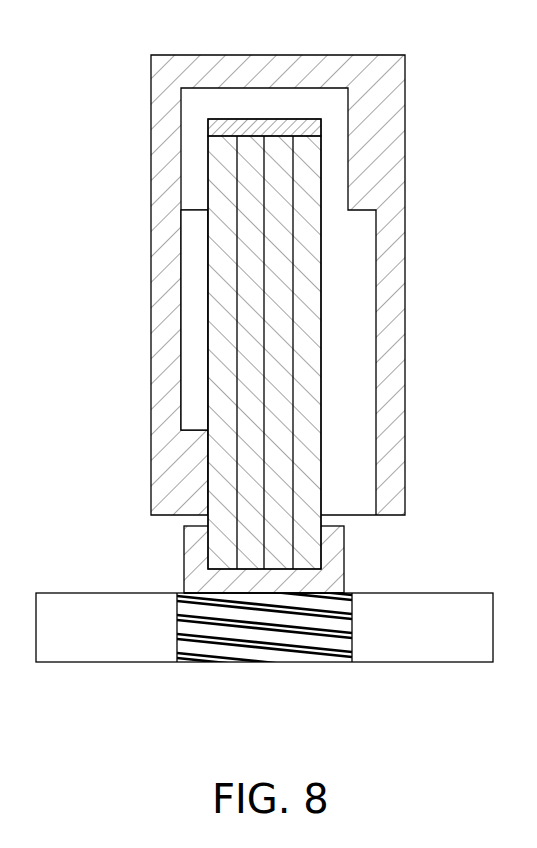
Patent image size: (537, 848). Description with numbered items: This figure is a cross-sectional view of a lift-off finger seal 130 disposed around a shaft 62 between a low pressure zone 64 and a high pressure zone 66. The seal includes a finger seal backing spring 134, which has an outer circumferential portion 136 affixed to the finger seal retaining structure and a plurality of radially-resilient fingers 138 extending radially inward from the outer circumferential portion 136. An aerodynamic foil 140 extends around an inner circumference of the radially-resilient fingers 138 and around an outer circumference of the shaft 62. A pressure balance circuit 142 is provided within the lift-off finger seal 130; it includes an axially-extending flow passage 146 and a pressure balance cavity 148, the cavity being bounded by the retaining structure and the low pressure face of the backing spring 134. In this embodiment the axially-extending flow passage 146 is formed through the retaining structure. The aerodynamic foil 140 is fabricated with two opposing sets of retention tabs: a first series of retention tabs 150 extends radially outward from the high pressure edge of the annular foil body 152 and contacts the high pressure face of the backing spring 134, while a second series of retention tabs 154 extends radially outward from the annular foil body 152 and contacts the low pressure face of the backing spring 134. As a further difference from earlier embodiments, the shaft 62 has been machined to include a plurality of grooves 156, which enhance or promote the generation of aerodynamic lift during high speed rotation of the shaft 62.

The shaft 62 is at (410, 655).
The low pressure zone 64 is at (126, 294).
The high pressure zone 66 is at (480, 346).
The lift-off finger seal 130 is at (122, 108).
The finger seal backing spring 134 is at (322, 277).
The outer circumferential portion 136 is at (312, 163).
The radially-resilient fingers 138 is at (312, 422).
The aerodynamic foil 140 is at (172, 587).
The pressure balance circuit 142 is at (367, 308).
The axially-extending flow passage 146 is at (270, 102).
The pressure balance cavity 148 is at (195, 242).
The first series of retention tabs 150 is at (345, 538).
The annular foil body 152 is at (308, 582).
The second series of retention tabs 154 is at (183, 538).
The grooves 156 is at (355, 677).